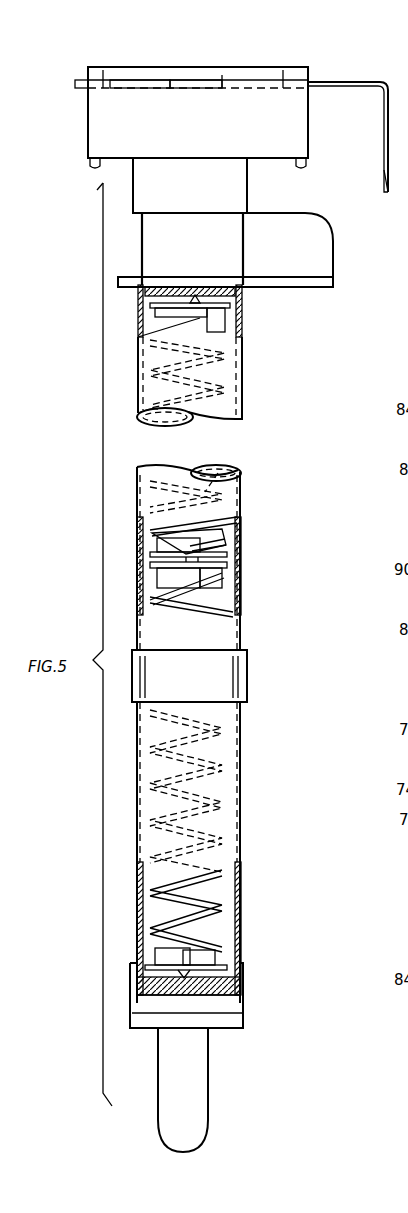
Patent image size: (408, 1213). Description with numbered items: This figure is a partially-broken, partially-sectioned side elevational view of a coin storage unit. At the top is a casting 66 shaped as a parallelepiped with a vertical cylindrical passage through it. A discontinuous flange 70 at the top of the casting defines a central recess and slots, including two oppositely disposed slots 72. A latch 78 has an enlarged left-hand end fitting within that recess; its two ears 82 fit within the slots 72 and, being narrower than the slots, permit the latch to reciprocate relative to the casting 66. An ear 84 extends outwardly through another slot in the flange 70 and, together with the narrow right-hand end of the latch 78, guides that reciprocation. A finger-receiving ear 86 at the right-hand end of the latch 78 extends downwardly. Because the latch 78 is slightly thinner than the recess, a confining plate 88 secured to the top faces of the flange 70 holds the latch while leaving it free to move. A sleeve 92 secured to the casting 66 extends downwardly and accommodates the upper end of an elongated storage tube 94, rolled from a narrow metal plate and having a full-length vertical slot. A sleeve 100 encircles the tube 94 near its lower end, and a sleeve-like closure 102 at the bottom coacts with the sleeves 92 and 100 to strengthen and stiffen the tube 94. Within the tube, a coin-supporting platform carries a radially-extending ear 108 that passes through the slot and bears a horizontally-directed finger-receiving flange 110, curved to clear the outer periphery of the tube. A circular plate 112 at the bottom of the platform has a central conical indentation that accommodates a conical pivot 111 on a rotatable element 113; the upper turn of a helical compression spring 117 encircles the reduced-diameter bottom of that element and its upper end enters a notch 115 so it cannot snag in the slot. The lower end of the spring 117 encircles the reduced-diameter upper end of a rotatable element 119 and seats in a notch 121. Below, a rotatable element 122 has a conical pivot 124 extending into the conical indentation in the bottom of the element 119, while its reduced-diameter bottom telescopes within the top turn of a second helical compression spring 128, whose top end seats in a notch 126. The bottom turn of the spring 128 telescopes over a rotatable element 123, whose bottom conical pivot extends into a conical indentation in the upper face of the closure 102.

The casting 66 is at (258, 136).
The discontinuous flange 70 is at (103, 78).
The slots 72 is at (212, 84).
The latch 78 is at (358, 92).
The ears 82 is at (150, 84).
The ear 84 is at (75, 84).
The finger-receiving ear 86 is at (384, 196).
The confining plate 88 is at (312, 78).
The sleeve 92 is at (248, 195).
The storage tube 94 is at (242, 578).
The sleeve 100 is at (248, 690).
The sleeve-like closure 102 is at (245, 1005).
The radially-extending ear 108 is at (330, 272).
The finger-receiving flange 110 is at (278, 292).
The conical pivot 111 is at (213, 280).
The circular plate 112 is at (140, 290).
The rotatable element 113 is at (228, 328).
The notch 115 is at (198, 318).
The helical compression spring 117 is at (245, 415).
The rotatable element 119 is at (150, 554).
The notch 121 is at (225, 536).
The rotatable element 122 is at (155, 570).
The rotatable element 123 is at (210, 958).
The conical pivot 124 is at (150, 564).
The notch 126 is at (222, 582).
The helical compression spring 128 is at (235, 466).